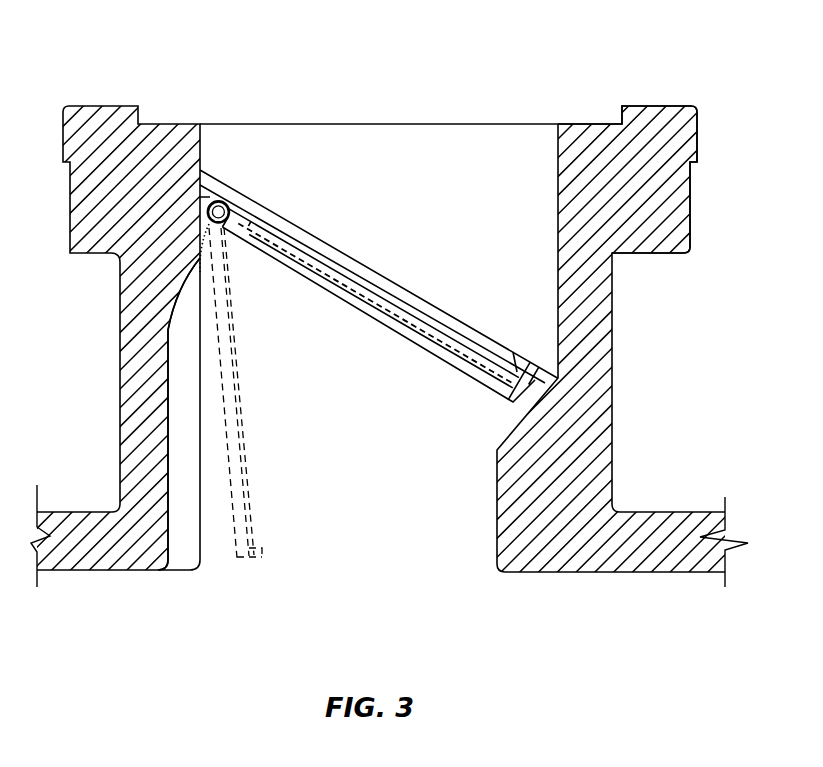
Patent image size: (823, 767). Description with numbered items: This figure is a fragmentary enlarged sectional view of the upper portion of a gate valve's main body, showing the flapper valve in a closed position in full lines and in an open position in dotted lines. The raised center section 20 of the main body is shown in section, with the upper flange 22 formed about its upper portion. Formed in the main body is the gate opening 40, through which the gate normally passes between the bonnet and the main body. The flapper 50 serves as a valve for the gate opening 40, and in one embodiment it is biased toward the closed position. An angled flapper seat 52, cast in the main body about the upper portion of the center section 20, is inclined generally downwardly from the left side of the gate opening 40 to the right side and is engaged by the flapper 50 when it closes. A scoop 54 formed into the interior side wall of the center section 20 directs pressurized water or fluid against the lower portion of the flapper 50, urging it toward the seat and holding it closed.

The center section 20 is at (590, 445).
The upper flange 22 is at (697, 124).
The gate opening 40 is at (418, 192).
The flapper 50 is at (363, 310).
The flapper seat 52 is at (453, 315).
The scoop 54 is at (178, 487).